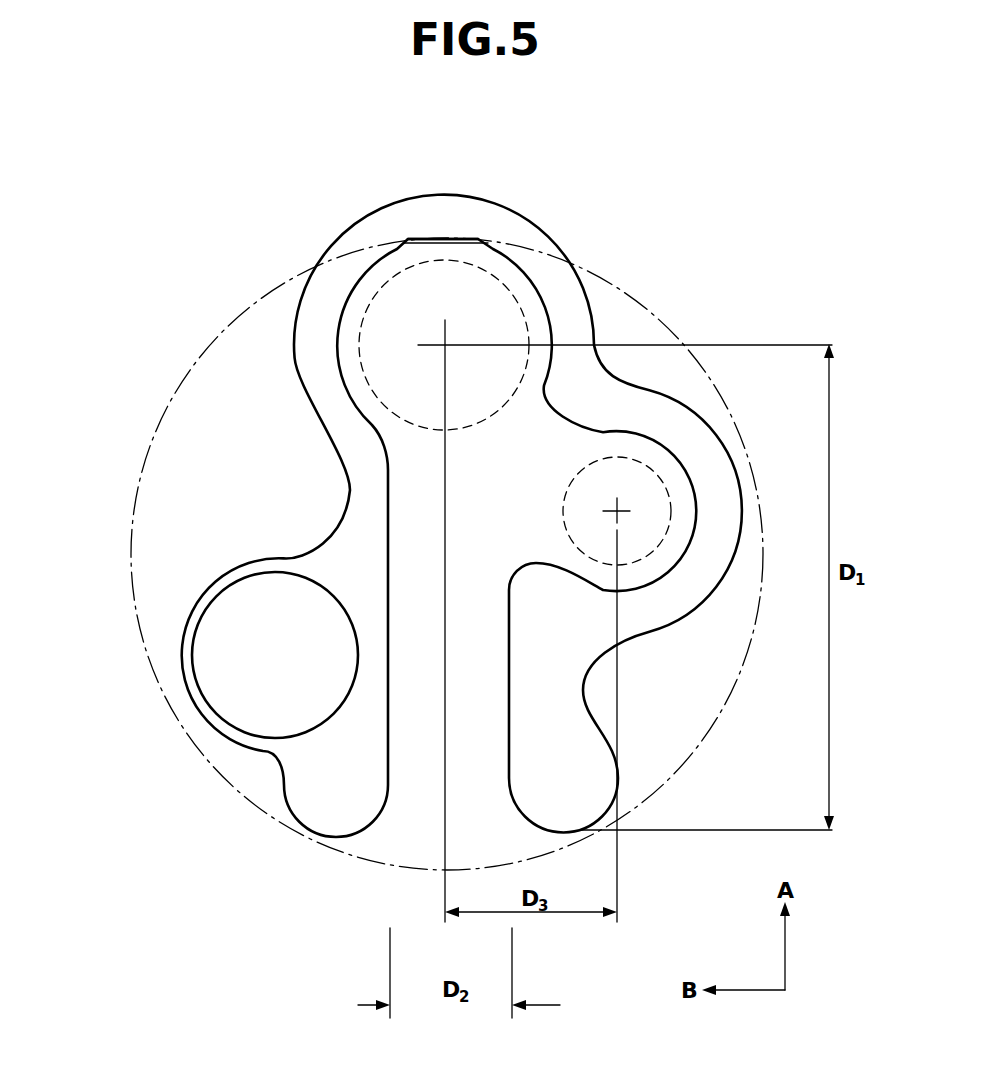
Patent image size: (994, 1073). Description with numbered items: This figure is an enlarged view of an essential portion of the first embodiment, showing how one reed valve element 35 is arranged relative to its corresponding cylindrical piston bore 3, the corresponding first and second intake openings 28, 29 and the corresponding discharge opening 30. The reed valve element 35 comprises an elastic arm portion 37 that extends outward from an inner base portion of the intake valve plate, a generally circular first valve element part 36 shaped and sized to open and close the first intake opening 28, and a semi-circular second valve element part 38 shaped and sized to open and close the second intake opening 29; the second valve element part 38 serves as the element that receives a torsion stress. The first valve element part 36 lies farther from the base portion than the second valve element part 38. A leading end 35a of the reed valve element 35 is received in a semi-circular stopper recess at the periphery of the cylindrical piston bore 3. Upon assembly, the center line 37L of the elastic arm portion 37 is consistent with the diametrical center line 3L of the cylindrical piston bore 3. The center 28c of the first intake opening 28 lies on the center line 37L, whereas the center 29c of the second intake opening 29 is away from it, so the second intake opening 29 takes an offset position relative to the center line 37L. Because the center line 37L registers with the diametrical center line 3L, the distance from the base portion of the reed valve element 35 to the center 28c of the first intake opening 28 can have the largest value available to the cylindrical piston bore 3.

The cylindrical piston bore 3 is at (168, 408).
The diametrical center line of the cylindrical piston bore 3L is at (324, 951).
The first intake opening 28 is at (479, 270).
The center of the first intake opening 28c is at (445, 345).
The second intake opening 29 is at (565, 500).
The center of the second intake opening 29c is at (616, 512).
The discharge opening 30 is at (209, 700).
The reed valve element 35 is at (556, 300).
The leading end of the reed valve element 35a is at (434, 238).
The first valve element part 36 is at (377, 278).
The elastic arm portion 37 is at (417, 752).
The center line of the elastic arm portion 37L is at (447, 815).
The second valve element part 38 is at (578, 567).